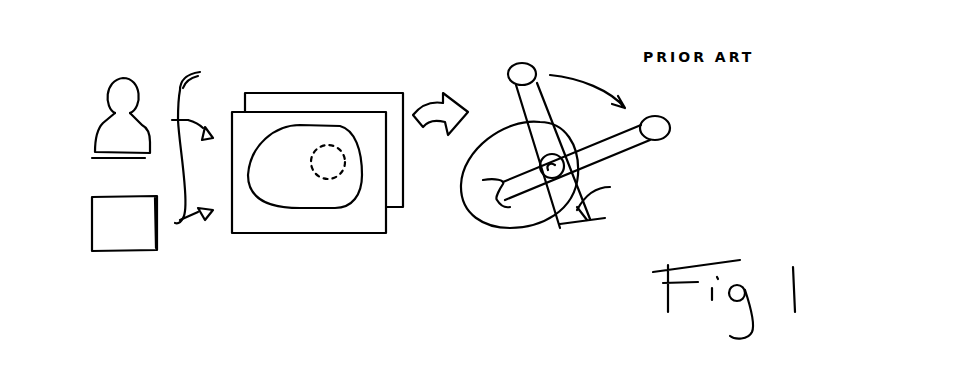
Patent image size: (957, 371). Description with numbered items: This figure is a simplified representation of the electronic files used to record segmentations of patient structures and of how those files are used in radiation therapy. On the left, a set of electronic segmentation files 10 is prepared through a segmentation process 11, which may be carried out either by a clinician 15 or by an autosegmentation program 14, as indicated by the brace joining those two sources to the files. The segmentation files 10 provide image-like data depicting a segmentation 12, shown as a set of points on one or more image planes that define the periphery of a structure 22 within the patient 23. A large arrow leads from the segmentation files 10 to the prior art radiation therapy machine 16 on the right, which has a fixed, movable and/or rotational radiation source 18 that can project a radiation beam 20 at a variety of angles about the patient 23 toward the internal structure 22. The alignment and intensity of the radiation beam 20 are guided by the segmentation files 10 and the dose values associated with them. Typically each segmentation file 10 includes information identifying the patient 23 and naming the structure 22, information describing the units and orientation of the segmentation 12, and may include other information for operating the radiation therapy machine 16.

The electronic segmentation files 10 is at (247, 129).
The segmentation process 11 is at (211, 63).
The segmentation 12 is at (327, 177).
The autosegmentation program 14 is at (102, 218).
The clinician 15 is at (107, 140).
The radiation therapy machine 16 is at (615, 154).
The radiation source 18 is at (535, 34).
The radiation beam 20 is at (610, 145).
The structure 22 is at (553, 178).
The patient 23 is at (473, 222).